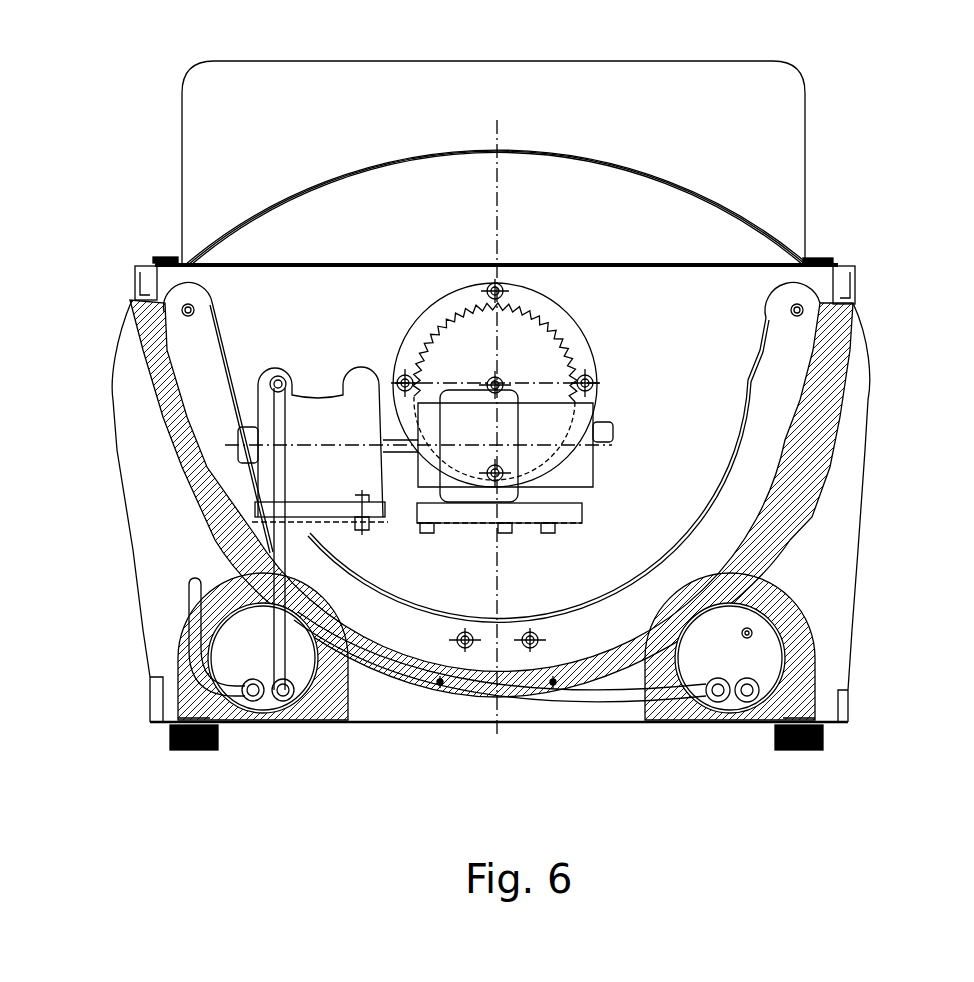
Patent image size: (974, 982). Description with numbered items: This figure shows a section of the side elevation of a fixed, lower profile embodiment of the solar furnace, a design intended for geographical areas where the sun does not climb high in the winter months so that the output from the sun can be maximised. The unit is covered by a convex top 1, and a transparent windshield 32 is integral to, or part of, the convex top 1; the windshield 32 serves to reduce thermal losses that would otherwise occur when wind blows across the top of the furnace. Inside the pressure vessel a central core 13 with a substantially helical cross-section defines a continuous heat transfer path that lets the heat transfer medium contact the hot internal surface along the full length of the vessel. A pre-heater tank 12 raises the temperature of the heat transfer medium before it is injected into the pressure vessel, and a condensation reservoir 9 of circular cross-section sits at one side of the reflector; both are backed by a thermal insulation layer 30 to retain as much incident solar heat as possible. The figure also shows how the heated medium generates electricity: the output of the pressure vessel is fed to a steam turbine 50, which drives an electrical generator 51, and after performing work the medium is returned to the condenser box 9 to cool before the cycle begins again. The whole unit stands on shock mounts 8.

The convex top 1 is at (680, 183).
The shock mounts 8 is at (825, 740).
The condensation reservoir 9 is at (697, 657).
The pre-heater tank 12 is at (742, 462).
The central core 13 is at (548, 368).
The thermal insulation layer 30 is at (205, 452).
The windshield 32 is at (762, 93).
The steam turbine 50 is at (357, 382).
The electrical generator 51 is at (575, 467).